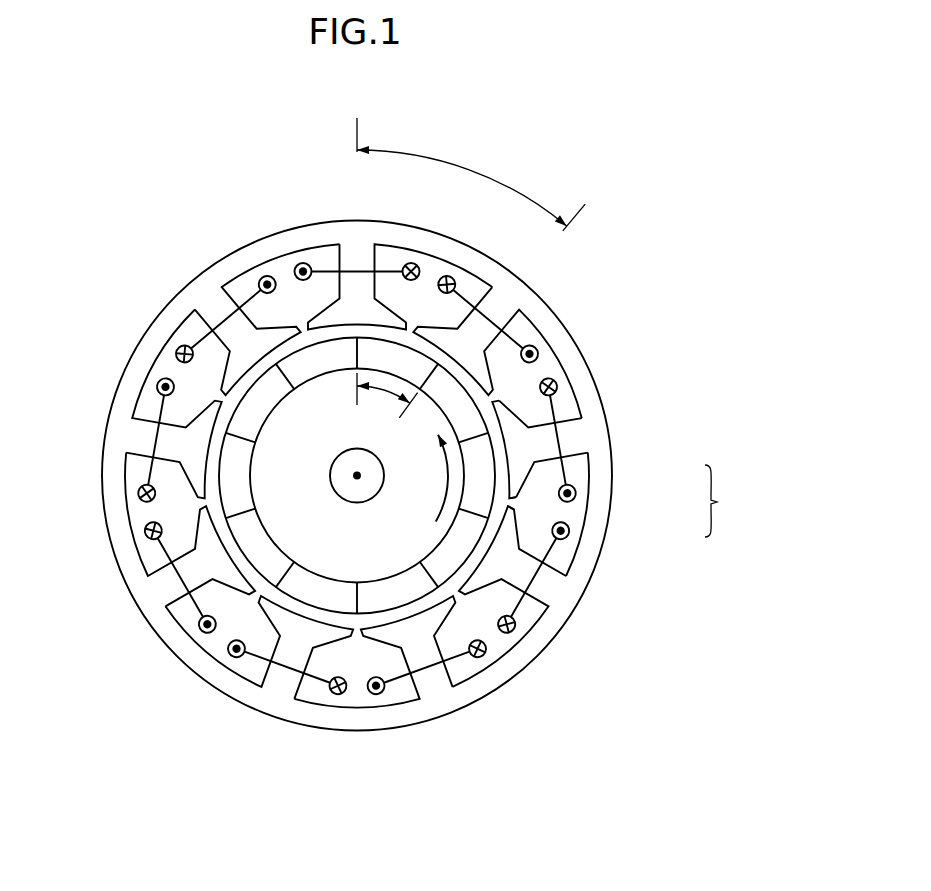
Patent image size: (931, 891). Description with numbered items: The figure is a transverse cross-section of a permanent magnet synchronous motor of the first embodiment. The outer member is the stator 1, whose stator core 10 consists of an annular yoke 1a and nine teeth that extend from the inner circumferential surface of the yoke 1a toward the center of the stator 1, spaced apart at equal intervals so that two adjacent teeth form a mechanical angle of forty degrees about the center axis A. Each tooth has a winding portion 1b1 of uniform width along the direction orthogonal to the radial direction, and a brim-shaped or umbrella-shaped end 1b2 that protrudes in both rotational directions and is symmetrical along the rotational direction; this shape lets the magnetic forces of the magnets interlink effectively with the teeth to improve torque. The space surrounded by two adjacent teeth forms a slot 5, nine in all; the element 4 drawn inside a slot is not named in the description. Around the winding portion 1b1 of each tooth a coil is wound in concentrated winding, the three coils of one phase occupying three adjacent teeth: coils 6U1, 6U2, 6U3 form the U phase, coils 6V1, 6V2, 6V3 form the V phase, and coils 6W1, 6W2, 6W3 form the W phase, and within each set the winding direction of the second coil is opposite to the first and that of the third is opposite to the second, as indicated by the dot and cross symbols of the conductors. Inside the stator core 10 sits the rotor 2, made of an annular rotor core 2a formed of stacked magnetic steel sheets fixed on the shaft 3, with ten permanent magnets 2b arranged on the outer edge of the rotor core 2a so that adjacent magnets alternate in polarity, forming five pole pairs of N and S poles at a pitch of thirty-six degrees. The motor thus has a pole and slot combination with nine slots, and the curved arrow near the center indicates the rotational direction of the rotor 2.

The stator 1 is at (547, 302).
The annular yoke 1a is at (583, 432).
The winding portion 1b1 is at (518, 447).
The end 1b2 is at (508, 502).
The rotor 2 is at (66, 313).
The annular rotor core 2a is at (297, 390).
The permanent magnets 2b is at (250, 427).
The shaft 3 is at (357, 480).
The insulator 4 is at (562, 555).
The slot 5 is at (530, 607).
The coil 6U1 is at (535, 348).
The coil 6U2 is at (410, 263).
The coil 6U3 is at (262, 279).
The coil 6V1 is at (138, 490).
The coil 6V2 is at (199, 627).
The coil 6V3 is at (336, 695).
The coil 6W1 is at (378, 695).
The coil 6W2 is at (515, 628).
The coil 6W3 is at (552, 380).
The stator core 10 is at (468, 232).
The center axis A is at (360, 478).